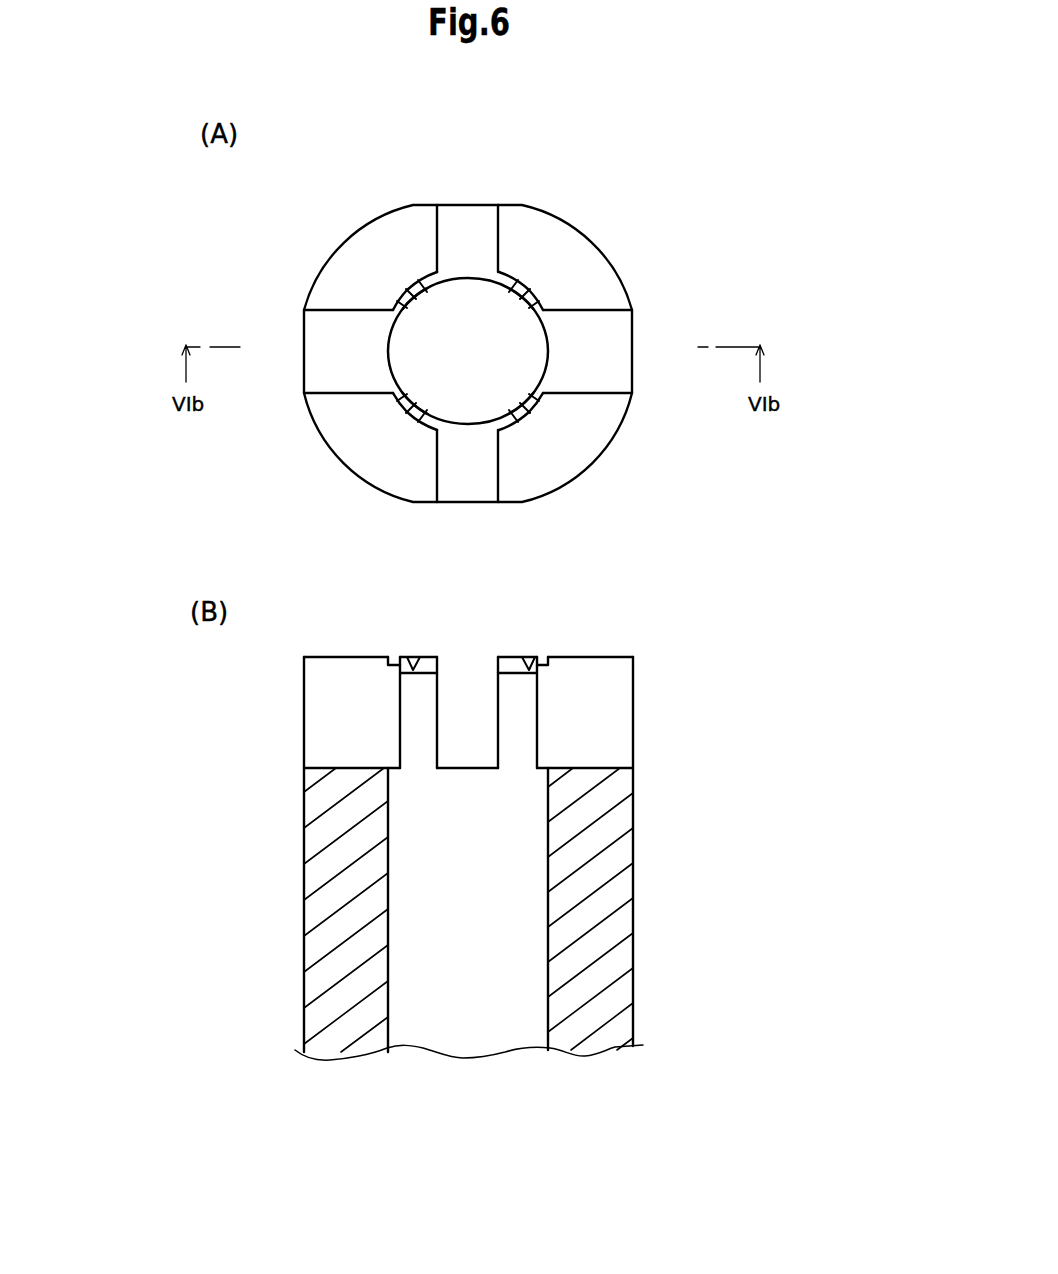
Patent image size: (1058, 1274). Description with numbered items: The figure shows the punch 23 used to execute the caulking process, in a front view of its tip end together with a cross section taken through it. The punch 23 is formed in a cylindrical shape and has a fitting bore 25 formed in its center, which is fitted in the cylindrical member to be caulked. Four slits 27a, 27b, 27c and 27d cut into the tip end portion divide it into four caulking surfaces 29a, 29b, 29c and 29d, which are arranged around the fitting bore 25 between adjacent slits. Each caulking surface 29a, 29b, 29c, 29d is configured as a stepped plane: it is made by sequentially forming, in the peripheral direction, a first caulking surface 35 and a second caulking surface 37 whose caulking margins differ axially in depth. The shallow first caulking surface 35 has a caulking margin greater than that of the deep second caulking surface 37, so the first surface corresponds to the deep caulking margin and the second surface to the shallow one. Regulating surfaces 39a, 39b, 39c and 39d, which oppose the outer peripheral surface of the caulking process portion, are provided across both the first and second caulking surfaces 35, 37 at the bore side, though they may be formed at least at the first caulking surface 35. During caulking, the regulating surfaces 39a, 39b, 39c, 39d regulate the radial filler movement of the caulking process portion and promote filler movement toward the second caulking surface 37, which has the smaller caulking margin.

In FIG. 6A, the punch 23 is at (538, 206).
In FIG. 6B, the punch 23 is at (633, 910).
In FIG. 6A, the fitting bore 25 is at (550, 341).
In FIG. 6B, the fitting bore 25 is at (548, 1022).
In FIG. 6A, the slit 27a is at (492, 205).
In FIG. 6B, the slit 27a is at (498, 740).
In FIG. 6A, the slit 27b is at (612, 388).
In FIG. 6B, the slit 27b is at (606, 710).
In FIG. 6A, the slit 27c is at (497, 478).
In FIG. 6A, the slit 27d is at (350, 388).
In FIG. 6B, the slit 27d is at (328, 730).
In FIG. 6A, the caulking surface 29a is at (547, 308).
In FIG. 6B, the caulking surface 29a is at (528, 665).
In FIG. 6A, the caulking surface 29b is at (538, 420).
In FIG. 6A, the caulking surface 29c is at (403, 418).
In FIG. 6A, the caulking surface 29d is at (408, 276).
In FIG. 6B, the caulking surface 29d is at (412, 665).
In FIG. 6A, the first caulking surface 35 is at (394, 309).
In FIG. 6B, the first caulking surface 35 is at (393, 661).
In FIG. 6A, the second caulking surface 37 is at (422, 275).
In FIG. 6B, the second caulking surface 37 is at (426, 658).
In FIG. 6A, the regulating surface 39a is at (508, 293).
In FIG. 6B, the regulating surface 39a is at (498, 666).
In FIG. 6A, the regulating surface 39b is at (520, 410).
In FIG. 6A, the regulating surface 39c is at (418, 410).
In FIG. 6A, the regulating surface 39d is at (418, 294).
In FIG. 6B, the regulating surface 39d is at (438, 662).